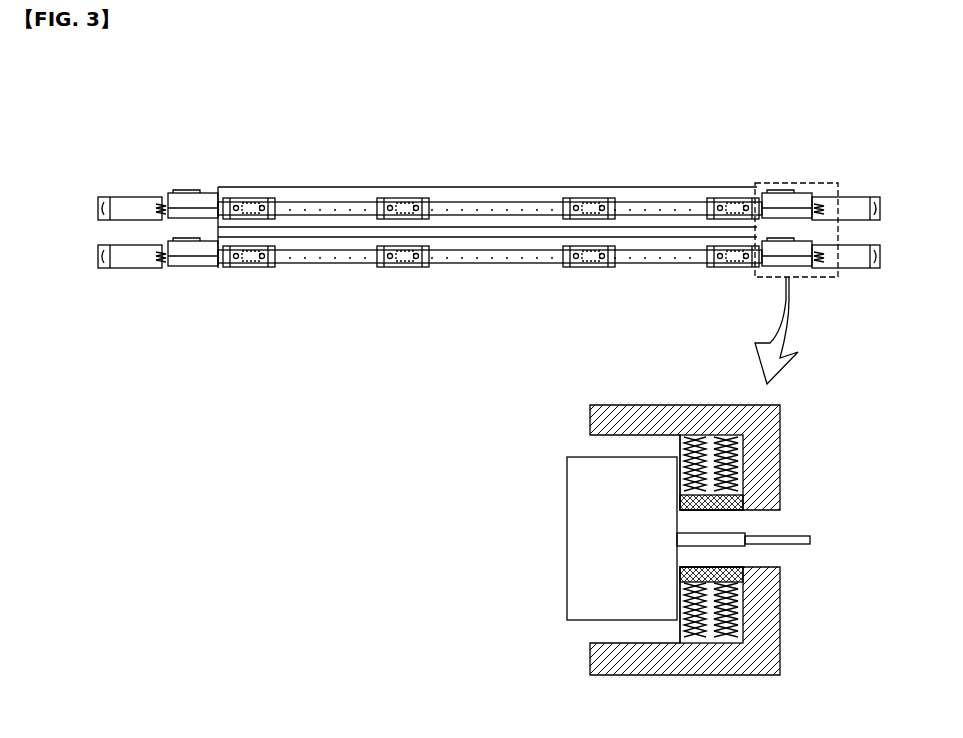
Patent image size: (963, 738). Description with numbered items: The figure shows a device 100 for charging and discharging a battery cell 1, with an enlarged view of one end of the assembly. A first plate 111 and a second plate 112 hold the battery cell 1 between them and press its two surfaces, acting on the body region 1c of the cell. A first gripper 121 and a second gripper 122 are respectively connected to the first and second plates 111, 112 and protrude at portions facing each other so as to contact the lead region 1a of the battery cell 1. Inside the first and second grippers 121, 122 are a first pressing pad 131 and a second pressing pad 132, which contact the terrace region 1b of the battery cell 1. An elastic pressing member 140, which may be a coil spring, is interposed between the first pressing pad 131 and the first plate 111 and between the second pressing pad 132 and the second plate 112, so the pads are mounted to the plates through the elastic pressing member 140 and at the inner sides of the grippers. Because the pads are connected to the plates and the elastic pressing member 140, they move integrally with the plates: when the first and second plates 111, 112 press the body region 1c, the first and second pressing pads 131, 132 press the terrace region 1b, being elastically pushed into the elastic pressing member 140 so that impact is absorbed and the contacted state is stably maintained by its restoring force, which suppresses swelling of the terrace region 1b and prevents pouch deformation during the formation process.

The device for charging and discharging a battery cell 100 is at (180, 127).
The battery cell 1 is at (527, 483).
The lead region 1a is at (812, 540).
The terrace region 1b is at (730, 535).
The body region 1c is at (634, 551).
The first plate 111 is at (590, 416).
The second plate 112 is at (590, 658).
The first gripper 121 is at (780, 456).
The second gripper 122 is at (780, 620).
The first pressing pad 131 is at (680, 500).
The second pressing pad 132 is at (680, 568).
The elastic pressing member 140 is at (680, 638).